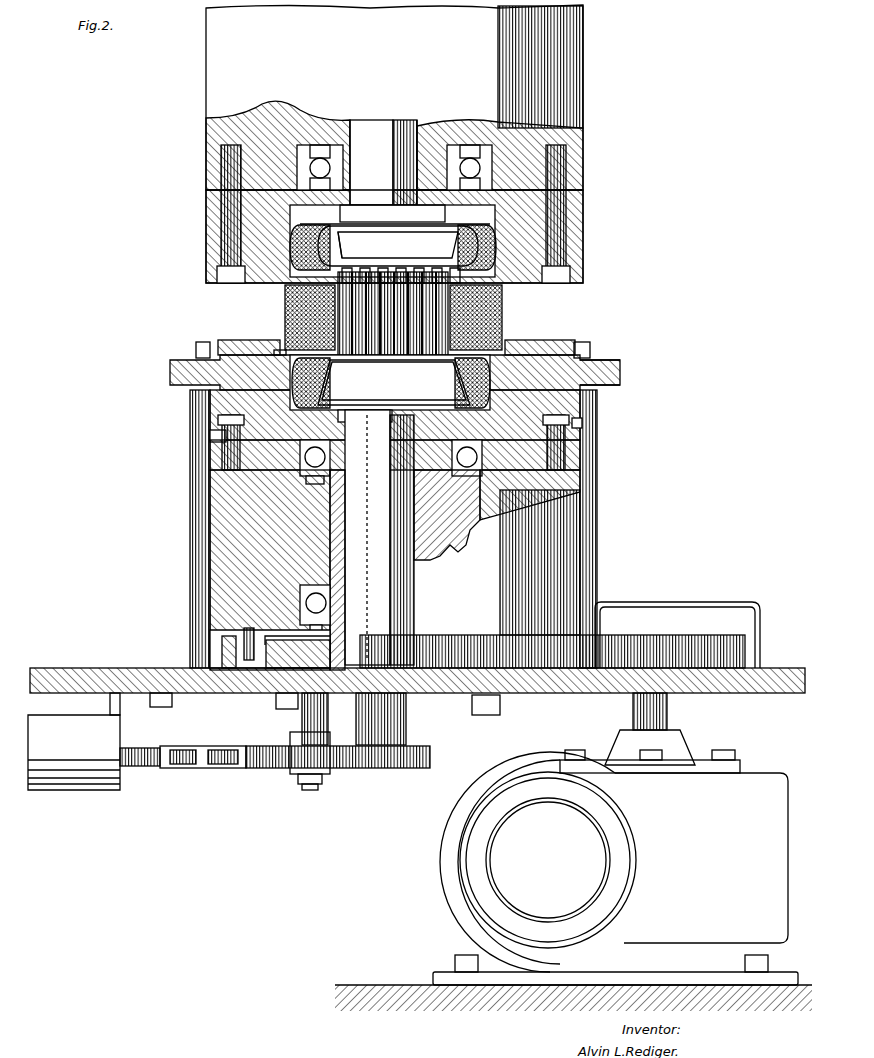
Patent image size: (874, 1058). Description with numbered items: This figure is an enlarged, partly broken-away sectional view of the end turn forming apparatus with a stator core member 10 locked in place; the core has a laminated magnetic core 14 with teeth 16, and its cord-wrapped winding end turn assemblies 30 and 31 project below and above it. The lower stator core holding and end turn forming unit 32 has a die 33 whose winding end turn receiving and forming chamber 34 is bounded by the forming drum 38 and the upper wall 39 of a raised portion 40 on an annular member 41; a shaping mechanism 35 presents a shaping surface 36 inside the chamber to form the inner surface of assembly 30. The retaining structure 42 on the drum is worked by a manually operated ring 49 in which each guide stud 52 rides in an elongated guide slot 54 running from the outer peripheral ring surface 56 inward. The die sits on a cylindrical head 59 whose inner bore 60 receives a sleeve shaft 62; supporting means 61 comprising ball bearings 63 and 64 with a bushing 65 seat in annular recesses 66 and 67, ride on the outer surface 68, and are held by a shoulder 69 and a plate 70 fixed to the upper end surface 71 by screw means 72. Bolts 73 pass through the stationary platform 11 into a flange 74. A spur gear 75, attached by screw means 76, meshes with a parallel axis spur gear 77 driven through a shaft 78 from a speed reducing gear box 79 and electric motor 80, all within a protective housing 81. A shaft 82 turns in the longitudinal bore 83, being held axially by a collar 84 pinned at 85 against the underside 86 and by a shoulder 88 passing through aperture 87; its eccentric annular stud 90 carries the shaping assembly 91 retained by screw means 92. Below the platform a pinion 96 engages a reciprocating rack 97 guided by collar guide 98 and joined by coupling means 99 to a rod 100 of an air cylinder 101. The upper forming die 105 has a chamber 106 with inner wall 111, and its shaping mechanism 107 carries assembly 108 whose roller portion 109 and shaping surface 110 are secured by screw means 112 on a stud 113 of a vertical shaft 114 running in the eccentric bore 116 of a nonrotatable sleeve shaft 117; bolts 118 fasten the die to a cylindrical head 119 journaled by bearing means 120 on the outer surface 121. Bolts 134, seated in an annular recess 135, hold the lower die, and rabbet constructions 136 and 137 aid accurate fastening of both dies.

The stator core member 10 is at (540, 320).
The laminated magnetic core 14 is at (488, 305).
The teeth 16 is at (500, 324).
The winding end turn assembly 31 is at (497, 248).
The stationary platform 11 is at (94, 668).
The winding end turn assembly 30 is at (292, 382).
The lower stator core holding and end turn forming unit 32 is at (595, 408).
The die 33 is at (557, 368).
The winding end turn receiving and forming chamber 34 is at (395, 403).
The shaping mechanism 35 is at (392, 388).
The shaping surface 36 is at (492, 392).
The forming drum 38 is at (218, 400).
The upper wall 39 is at (428, 414).
The raised portion 40 is at (481, 458).
The annular member 41 is at (584, 440).
The stator core member holding structure 42 is at (231, 345).
The manually operated ring 49 is at (620, 372).
The guide stud 52 is at (203, 342).
The elongated guide slot 54 is at (620, 386).
The outer peripheral ring surface 56 is at (176, 370).
The cylindrical head 59 is at (562, 490).
The inner bore 60 is at (325, 542).
The rotatable supporting means 61 is at (478, 498).
The sleeve shaft 62 is at (440, 530).
The ball bearing 63 is at (300, 595).
The ball bearing 64 is at (306, 468).
The bushing 65 is at (325, 560).
The annular recess 66 is at (300, 620).
The annular recess 67 is at (300, 455).
The outer surface 68 is at (322, 519).
The shoulder 69 is at (330, 638).
The plate 70 is at (448, 434).
The upper end surface 71 is at (352, 430).
The screw means 72 is at (428, 456).
The bolts 73 is at (286, 708).
The flange 74 is at (276, 662).
The spur gear 75 is at (226, 645).
The screw means 76 is at (248, 660).
The parallel axis spur gear 77 is at (696, 634).
The shaft 78 is at (667, 712).
The speed reducing gear box 79 is at (690, 860).
The electric motor 80 is at (478, 858).
The protective housing 81 is at (598, 545).
The shaft 82 is at (386, 509).
The longitudinal bore 83 is at (348, 523).
The collar 84 is at (330, 700).
The pin 85 is at (404, 708).
The underside 86 is at (214, 694).
The aperture 87 is at (418, 440).
The shoulder 88 is at (376, 428).
The annular stud 90 is at (410, 406).
The shaping assembly 91 is at (359, 388).
The screw means 92 is at (396, 362).
The pinion 96 is at (406, 730).
The reciprocating rack 97 is at (280, 354).
The collar guide 98 is at (312, 790).
The coupling means 99 is at (206, 768).
The rod 100 is at (136, 768).
The air cylinder 101 is at (72, 790).
The upper forming die 105 is at (210, 218).
The winding end turn receiving and forming chamber 106 is at (300, 222).
The shaping mechanism 107 is at (435, 222).
The shaping assembly 108 is at (398, 246).
The roller portion 109 is at (355, 222).
The shaping surface 110 is at (340, 240).
The inner wall 111 is at (300, 240).
The screw means 112 is at (392, 268).
The stud 113 is at (398, 215).
The vertical shaft 114 is at (370, 155).
The eccentric bore 116 is at (412, 130).
The nonrotatable sleeve shaft 117 is at (430, 128).
The bolts 118 is at (568, 168).
The cylindrical head 119 is at (218, 150).
The bearing means 120 is at (478, 148).
The outer surface 121 is at (332, 158).
The bolts 134 is at (228, 458).
The annular recess 135 is at (582, 424).
The rabbet construction 136 is at (212, 440).
The rabbet construction 137 is at (584, 190).